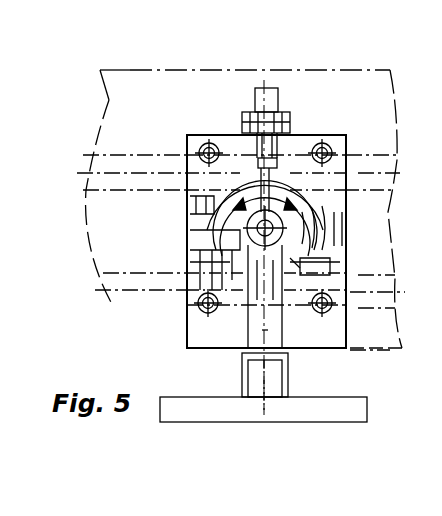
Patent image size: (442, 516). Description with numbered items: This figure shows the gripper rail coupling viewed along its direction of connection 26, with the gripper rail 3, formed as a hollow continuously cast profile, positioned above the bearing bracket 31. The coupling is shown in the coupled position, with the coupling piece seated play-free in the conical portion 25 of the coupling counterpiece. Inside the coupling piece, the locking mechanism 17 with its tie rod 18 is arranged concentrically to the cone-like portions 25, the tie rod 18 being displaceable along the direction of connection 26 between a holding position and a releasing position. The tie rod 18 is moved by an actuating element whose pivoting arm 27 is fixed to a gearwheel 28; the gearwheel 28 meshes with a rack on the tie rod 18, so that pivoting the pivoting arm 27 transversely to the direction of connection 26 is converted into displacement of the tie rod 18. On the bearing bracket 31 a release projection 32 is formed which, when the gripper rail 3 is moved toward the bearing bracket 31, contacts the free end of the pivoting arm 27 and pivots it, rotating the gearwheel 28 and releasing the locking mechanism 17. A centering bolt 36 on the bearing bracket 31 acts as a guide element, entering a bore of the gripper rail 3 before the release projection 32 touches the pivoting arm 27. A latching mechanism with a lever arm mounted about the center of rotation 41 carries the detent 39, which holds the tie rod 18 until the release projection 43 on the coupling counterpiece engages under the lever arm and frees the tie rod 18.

The gripper rail 3 is at (120, 83).
The locking mechanism 17 is at (237, 205).
The tie rod 18 is at (255, 226).
The conical portion 25 is at (345, 192).
The direction of connection 26 is at (431, 251).
The pivoting arm 27 is at (270, 335).
The gearwheel 28 is at (278, 298).
The bearing bracket 31 is at (305, 412).
The release projection 32 is at (255, 388).
The centering bolt 36 is at (242, 373).
The detent 39 is at (282, 170).
The center of rotation 41 is at (293, 123).
The release projection 43 is at (267, 98).